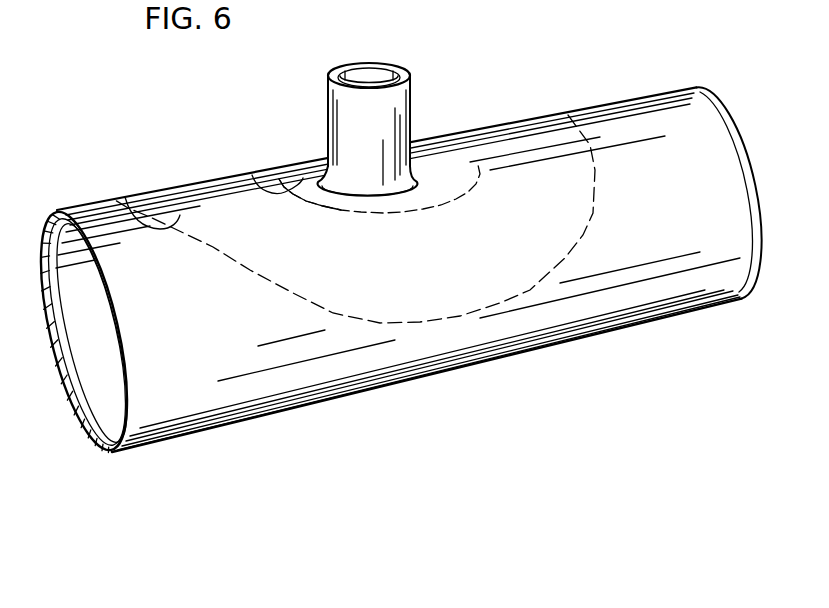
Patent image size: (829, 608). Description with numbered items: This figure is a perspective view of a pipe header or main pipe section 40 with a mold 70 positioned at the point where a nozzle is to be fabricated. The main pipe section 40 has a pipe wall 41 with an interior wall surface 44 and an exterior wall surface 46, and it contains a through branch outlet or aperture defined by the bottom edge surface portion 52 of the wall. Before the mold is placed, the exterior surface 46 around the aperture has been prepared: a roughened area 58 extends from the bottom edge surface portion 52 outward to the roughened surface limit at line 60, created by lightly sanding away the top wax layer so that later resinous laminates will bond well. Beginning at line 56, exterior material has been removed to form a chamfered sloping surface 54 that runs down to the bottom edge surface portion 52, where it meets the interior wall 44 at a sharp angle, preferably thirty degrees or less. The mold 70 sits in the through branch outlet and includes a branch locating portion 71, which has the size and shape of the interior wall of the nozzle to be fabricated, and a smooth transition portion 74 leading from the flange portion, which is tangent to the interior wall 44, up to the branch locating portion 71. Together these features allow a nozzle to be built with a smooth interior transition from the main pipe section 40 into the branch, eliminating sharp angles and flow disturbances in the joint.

The main pipe section 40 is at (290, 422).
The pipe wall 41 is at (102, 451).
The interior wall surface 44 is at (85, 388).
The exterior wall surface 46 is at (257, 402).
The bottom edge surface portion 52 is at (442, 138).
The sloping surface 54 is at (297, 178).
The line 56 is at (275, 195).
The roughened area 58 is at (195, 205).
The roughened surface limit line 60 is at (130, 218).
The mold 70 is at (322, 98).
The branch locating portion 71 is at (333, 137).
The transition portion 74 is at (322, 168).